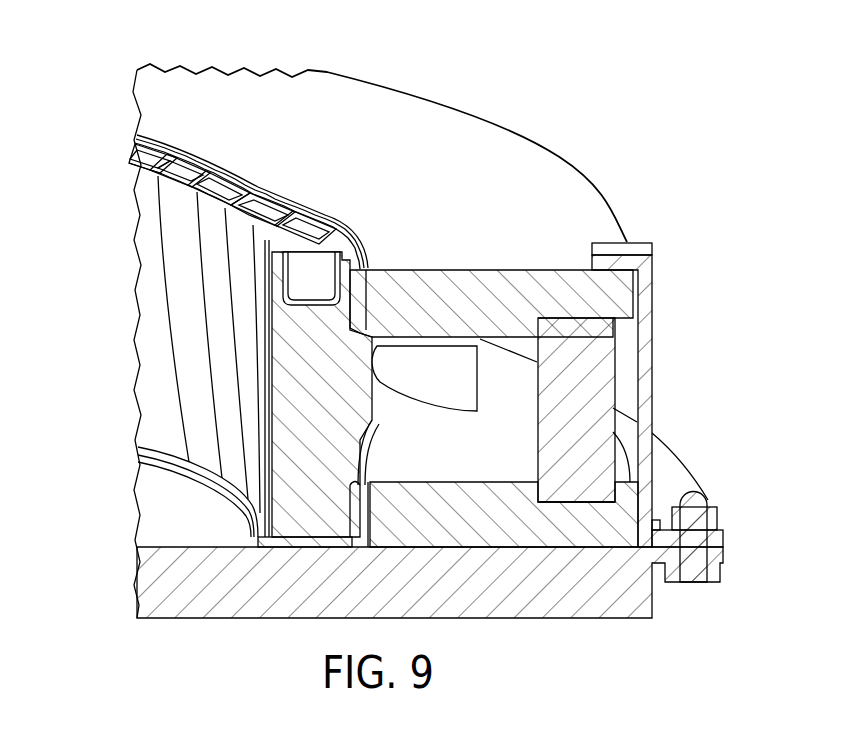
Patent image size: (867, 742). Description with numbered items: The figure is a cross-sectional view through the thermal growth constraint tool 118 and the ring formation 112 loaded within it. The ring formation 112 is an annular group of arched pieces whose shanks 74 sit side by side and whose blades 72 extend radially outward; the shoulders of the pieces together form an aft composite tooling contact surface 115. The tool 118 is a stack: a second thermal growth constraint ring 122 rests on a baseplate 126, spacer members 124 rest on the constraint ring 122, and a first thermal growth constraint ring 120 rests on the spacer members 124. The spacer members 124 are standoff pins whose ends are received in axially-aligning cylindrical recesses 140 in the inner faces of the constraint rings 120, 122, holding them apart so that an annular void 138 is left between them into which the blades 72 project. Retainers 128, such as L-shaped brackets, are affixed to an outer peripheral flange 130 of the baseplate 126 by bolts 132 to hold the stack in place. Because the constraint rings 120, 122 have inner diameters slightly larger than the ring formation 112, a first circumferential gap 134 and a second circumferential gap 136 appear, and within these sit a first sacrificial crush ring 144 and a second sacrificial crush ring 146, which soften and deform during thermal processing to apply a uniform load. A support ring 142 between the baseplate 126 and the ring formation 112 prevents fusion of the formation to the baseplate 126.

The blades 72 is at (455, 360).
The shank 74 is at (277, 487).
The ring formation 112 is at (140, 278).
The aft composite tooling contact surface 115 is at (350, 498).
The thermal growth constraint tool 118 is at (449, 100).
The first thermal growth constraint ring 120 is at (514, 142).
The second thermal growth constraint ring 122 is at (513, 540).
The spacer members 124 is at (550, 417).
The baseplate 126 is at (143, 583).
The retainers 128 is at (652, 337).
The outer peripheral flange 130 is at (675, 470).
The bolts 132 is at (693, 580).
The first circumferential gap 134 is at (367, 285).
The second circumferential gap 136 is at (373, 530).
The annular void 138 is at (488, 476).
The cylindrical recesses 140 is at (297, 262).
The support ring 142 is at (307, 547).
The first sacrificial crush ring 144 is at (338, 222).
The second sacrificial crush ring 146 is at (360, 500).